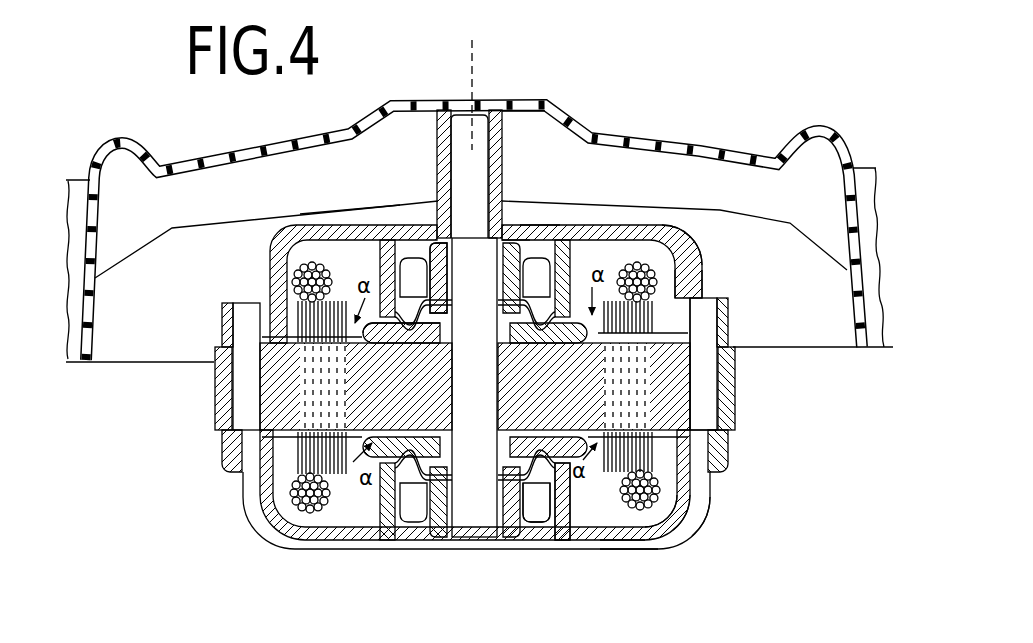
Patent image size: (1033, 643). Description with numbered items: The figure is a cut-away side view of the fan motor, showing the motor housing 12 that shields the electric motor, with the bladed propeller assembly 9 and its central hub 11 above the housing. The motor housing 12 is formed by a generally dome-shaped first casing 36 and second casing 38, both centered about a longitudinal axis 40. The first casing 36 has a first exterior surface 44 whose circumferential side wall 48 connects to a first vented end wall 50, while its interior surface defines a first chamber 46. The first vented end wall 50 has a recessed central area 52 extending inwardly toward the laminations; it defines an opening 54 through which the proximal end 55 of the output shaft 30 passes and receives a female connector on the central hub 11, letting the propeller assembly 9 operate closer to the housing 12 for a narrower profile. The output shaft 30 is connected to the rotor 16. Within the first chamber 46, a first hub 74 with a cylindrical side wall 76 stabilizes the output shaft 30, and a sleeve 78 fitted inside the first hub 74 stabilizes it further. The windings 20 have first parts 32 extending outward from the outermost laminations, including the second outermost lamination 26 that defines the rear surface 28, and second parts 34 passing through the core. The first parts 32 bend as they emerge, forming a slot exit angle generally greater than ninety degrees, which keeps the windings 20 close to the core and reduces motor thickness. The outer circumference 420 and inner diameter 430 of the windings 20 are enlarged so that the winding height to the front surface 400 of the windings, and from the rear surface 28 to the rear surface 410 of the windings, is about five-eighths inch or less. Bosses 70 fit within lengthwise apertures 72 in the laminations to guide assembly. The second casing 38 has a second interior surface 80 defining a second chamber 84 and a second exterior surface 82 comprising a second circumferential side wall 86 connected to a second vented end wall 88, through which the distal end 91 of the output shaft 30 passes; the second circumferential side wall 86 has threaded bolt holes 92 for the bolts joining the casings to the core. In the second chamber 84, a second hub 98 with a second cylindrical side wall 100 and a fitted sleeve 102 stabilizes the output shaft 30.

The bladed propeller assembly 9 is at (113, 138).
The central hub 11 is at (438, 142).
The motor housing 12 is at (755, 421).
The rotor 16 is at (582, 320).
The windings 20 is at (653, 260).
The second outermost lamination 26 is at (283, 307).
The rear surface 28 is at (275, 540).
The output shaft 30 is at (478, 172).
The first parts 32 is at (701, 313).
The second parts 34 is at (703, 389).
The first casing 36 is at (246, 242).
The second casing 38 is at (241, 518).
The longitudinal axis 40 is at (480, 62).
The first exterior surface 44 is at (337, 206).
The first chamber 46 is at (312, 250).
The circumferential side wall 48 is at (709, 292).
The first vented end wall 50 is at (613, 228).
The recessed central area 52 is at (532, 232).
The opening 54 is at (518, 236).
The proximal end 55 is at (508, 150).
The boss 70 is at (251, 364).
The lengthwise apertures 72 is at (705, 398).
The first hub 74 is at (370, 210).
The cylindrical side wall 76 is at (412, 215).
The sleeve 78 is at (485, 298).
The second interior surface 80 is at (633, 522).
The second exterior surface 82 is at (704, 530).
The second chamber 84 is at (714, 518).
The second circumferential side wall 86 is at (721, 487).
The second vented end wall 88 is at (635, 540).
The distal end 91 is at (469, 498).
The threaded bolt holes 92 is at (245, 444).
The second hub 98 is at (380, 503).
The second cylindrical side wall 100 is at (547, 505).
The sleeve 102 is at (530, 508).
The front surface of the windings 400 is at (690, 230).
The rear surface of the windings 410 is at (668, 498).
The outer circumference of the windings 420 is at (700, 290).
The inner diameter of the windings 430 is at (600, 455).